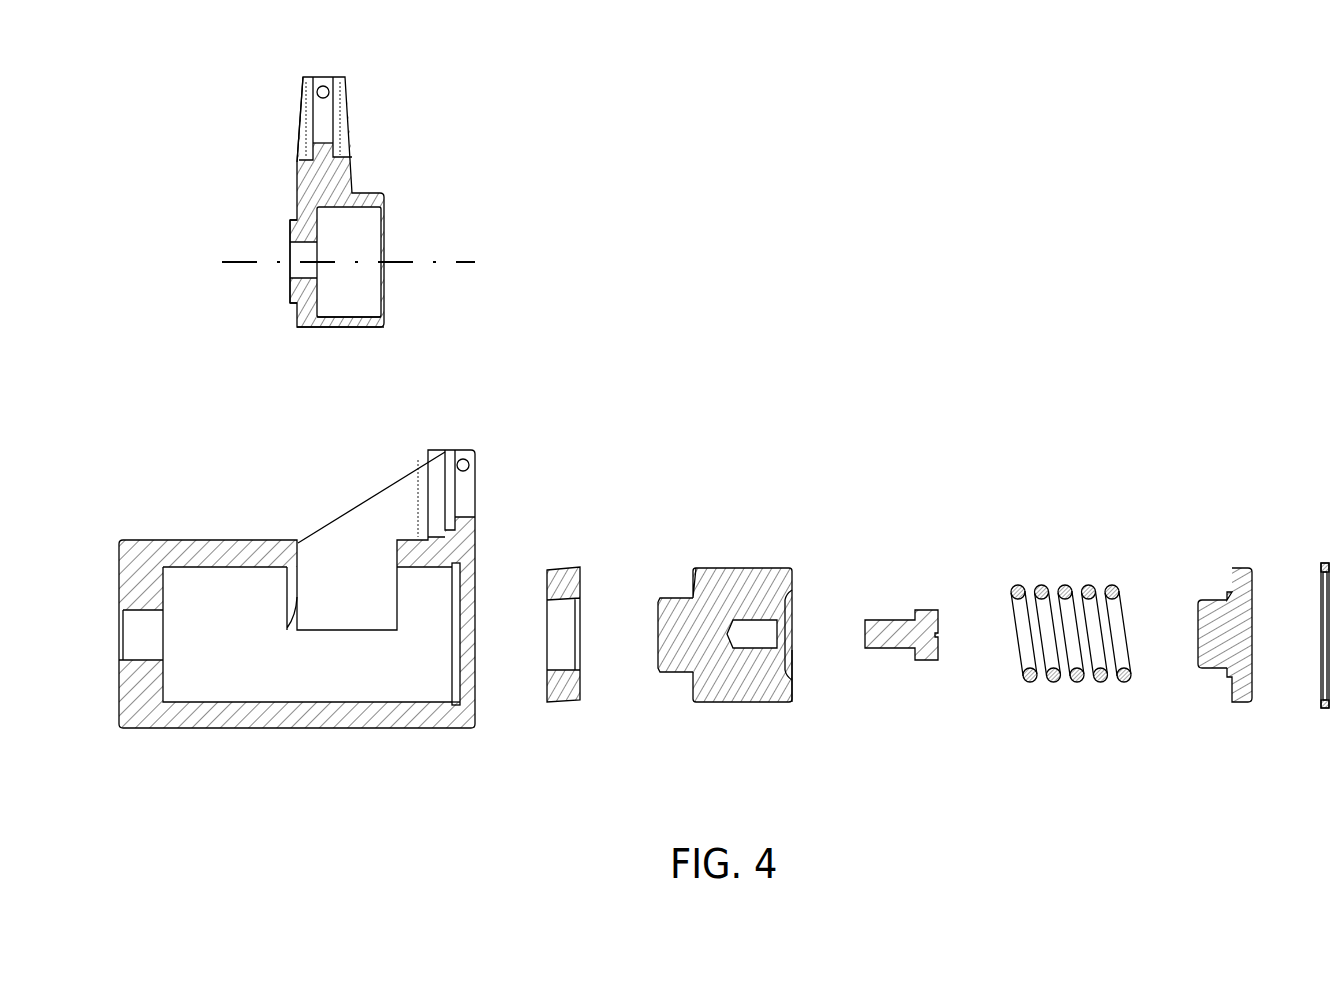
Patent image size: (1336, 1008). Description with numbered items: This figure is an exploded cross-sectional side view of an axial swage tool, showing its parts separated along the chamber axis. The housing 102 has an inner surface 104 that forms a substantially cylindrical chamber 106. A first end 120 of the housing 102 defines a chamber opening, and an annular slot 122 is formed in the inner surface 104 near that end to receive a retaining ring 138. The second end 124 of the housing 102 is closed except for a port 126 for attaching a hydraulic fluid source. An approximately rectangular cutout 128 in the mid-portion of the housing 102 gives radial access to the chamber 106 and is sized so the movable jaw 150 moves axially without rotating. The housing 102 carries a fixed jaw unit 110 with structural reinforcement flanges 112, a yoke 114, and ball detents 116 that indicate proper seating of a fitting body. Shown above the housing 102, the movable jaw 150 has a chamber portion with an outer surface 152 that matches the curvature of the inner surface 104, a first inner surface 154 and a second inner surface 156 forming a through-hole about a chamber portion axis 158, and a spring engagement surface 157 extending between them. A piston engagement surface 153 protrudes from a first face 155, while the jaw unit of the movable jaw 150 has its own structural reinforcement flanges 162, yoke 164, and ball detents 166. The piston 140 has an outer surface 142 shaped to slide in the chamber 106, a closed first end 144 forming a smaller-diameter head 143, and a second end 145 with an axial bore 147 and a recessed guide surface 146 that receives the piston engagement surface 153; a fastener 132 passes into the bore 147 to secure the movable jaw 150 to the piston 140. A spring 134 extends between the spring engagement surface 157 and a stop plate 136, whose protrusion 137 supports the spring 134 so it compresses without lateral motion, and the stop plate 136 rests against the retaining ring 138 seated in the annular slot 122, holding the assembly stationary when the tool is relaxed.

The housing 102 is at (143, 542).
The inner surface 104 is at (215, 570).
The chamber 106 is at (261, 669).
The fixed jaw unit 110 is at (465, 447).
The structural reinforcement flanges 112 is at (393, 487).
The yoke 114 is at (465, 498).
The ball detents 116 is at (472, 467).
The first end 120 is at (477, 630).
The annular slot 122 is at (455, 703).
The second end 124 is at (120, 687).
The port 126 is at (120, 612).
The cutout 128 is at (340, 552).
The fastener 132 is at (923, 608).
The spring 134 is at (1067, 588).
The stop plate 136 is at (1238, 568).
The protrusion 137 is at (1203, 602).
The retaining ring 138 is at (1322, 563).
The piston 140 is at (790, 543).
The outer surface 142 is at (730, 568).
The head 143 is at (670, 598).
The first end 144 is at (658, 642).
The second end 145 is at (792, 692).
The recessed guide surface 146 is at (785, 660).
The axial bore 147 is at (745, 643).
The movable jaw 150 is at (432, 151).
The outer surface 152 is at (353, 328).
The piston engagement surface 153 is at (290, 230).
The first inner surface 154 is at (360, 207).
The first face 155 is at (297, 192).
The second inner surface 156 is at (293, 278).
The spring engagement surface 157 is at (317, 293).
The chamber portion axis 158 is at (227, 260).
The structural reinforcement flanges 162 is at (310, 85).
The yoke 164 is at (325, 130).
The ball detents 166 is at (328, 95).